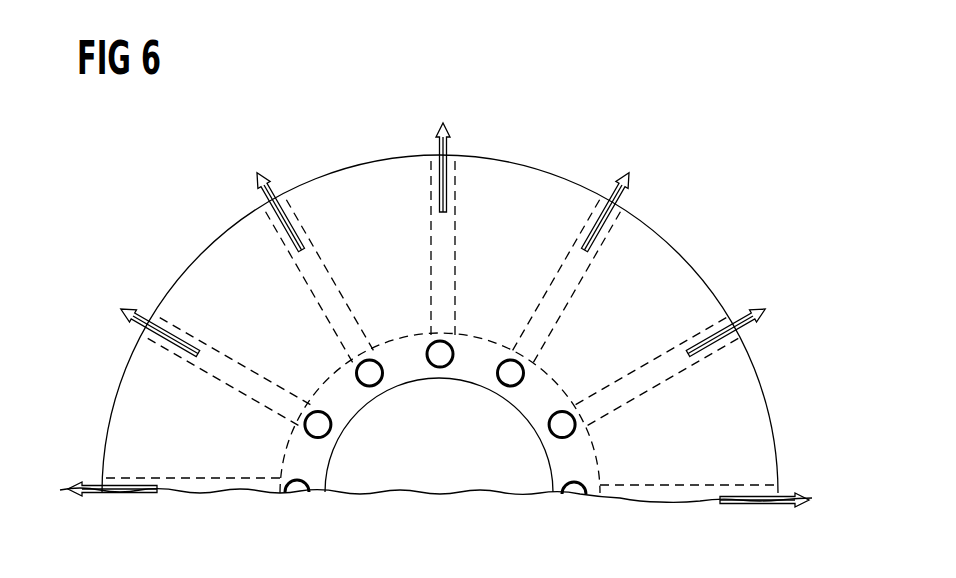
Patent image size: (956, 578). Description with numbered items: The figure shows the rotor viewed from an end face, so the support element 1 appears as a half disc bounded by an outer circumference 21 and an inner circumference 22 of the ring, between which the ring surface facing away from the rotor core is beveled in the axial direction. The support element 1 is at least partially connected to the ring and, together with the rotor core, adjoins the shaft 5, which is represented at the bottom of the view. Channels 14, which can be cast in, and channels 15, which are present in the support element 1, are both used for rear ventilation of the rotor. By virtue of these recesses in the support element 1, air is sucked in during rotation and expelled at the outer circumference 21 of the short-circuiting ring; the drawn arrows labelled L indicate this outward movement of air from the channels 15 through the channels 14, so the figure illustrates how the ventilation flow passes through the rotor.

The support element 1 is at (582, 152).
The outer circumference 21 is at (503, 145).
The channels 14 is at (312, 249).
The channels 15 is at (386, 334).
The inner circumference 22 is at (449, 396).
The shaft 5 is at (416, 486).
The air flow direction L is at (270, 181).